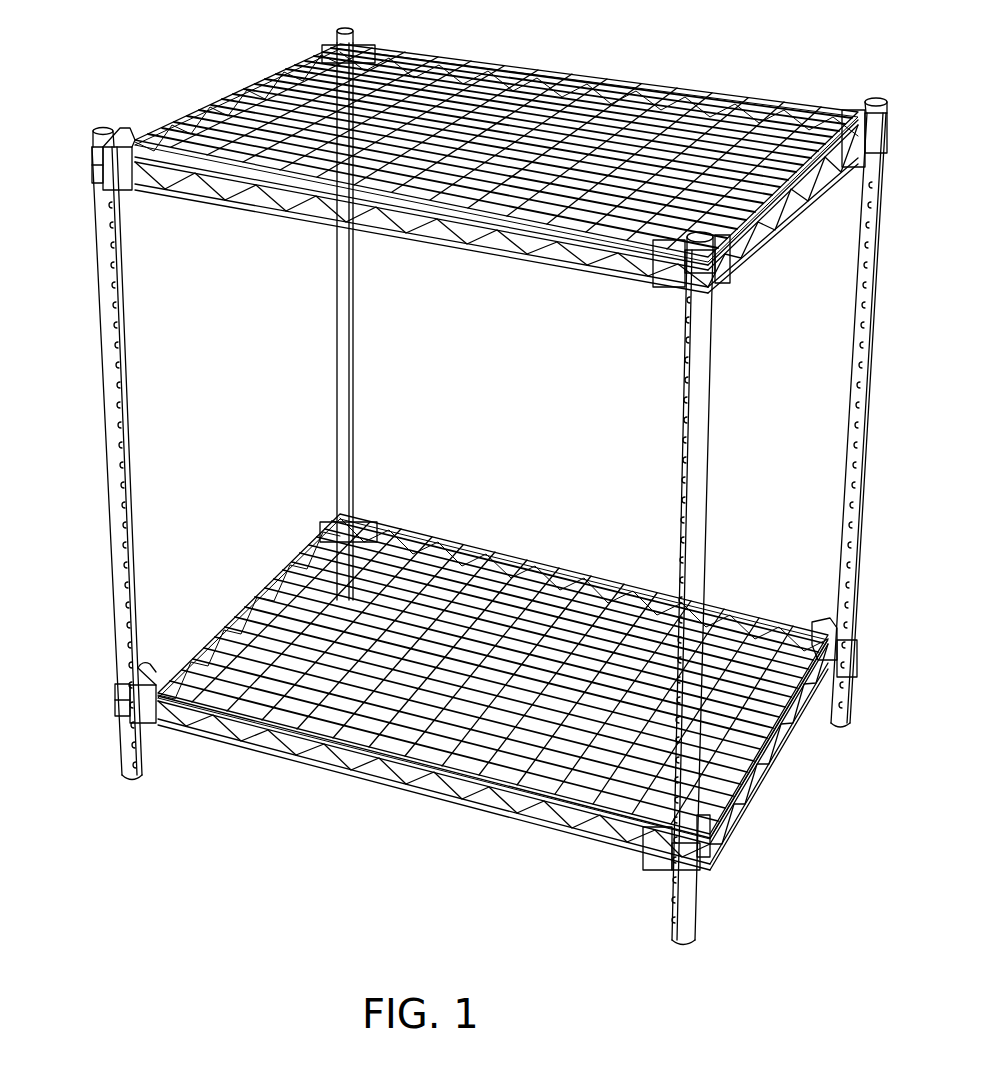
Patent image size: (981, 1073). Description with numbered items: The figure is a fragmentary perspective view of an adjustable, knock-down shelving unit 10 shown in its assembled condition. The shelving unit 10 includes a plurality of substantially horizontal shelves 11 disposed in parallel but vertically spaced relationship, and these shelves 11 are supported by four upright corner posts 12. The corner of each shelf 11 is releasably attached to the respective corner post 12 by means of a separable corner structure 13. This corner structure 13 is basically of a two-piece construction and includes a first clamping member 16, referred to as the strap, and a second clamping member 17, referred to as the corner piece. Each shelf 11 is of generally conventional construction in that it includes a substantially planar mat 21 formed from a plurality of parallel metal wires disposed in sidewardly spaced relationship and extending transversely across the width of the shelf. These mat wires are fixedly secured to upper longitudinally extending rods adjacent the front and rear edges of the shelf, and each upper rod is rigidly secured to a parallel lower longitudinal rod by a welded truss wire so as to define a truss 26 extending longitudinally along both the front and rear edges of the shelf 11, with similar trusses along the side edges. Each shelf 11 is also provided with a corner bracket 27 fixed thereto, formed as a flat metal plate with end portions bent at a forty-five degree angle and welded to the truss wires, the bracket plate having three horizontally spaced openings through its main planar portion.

The shelving unit 10 is at (205, 835).
The shelf 11 is at (663, 82).
The corner post 12 is at (113, 357).
The corner structure 13 is at (123, 112).
The first clamping member 16 is at (97, 165).
The second clamping member 17 is at (117, 175).
The mat 21 is at (590, 607).
The truss 26 is at (418, 783).
The corner bracket 27 is at (355, 538).